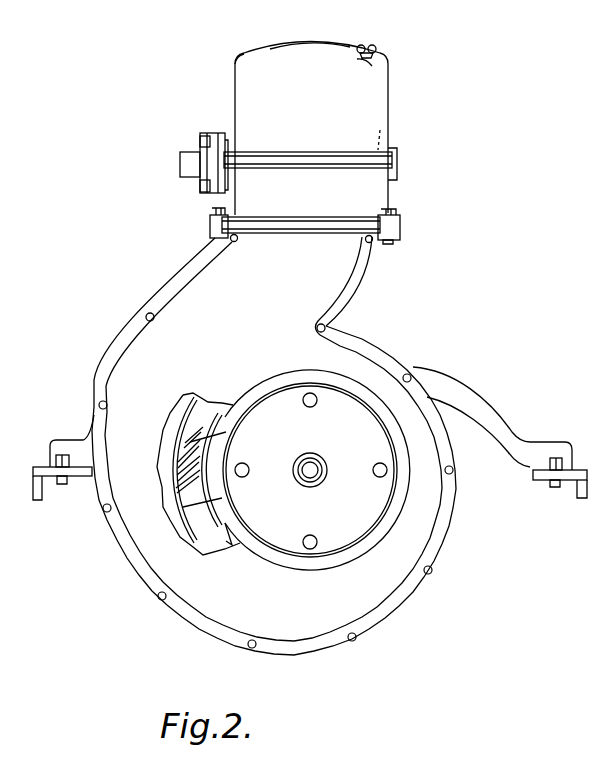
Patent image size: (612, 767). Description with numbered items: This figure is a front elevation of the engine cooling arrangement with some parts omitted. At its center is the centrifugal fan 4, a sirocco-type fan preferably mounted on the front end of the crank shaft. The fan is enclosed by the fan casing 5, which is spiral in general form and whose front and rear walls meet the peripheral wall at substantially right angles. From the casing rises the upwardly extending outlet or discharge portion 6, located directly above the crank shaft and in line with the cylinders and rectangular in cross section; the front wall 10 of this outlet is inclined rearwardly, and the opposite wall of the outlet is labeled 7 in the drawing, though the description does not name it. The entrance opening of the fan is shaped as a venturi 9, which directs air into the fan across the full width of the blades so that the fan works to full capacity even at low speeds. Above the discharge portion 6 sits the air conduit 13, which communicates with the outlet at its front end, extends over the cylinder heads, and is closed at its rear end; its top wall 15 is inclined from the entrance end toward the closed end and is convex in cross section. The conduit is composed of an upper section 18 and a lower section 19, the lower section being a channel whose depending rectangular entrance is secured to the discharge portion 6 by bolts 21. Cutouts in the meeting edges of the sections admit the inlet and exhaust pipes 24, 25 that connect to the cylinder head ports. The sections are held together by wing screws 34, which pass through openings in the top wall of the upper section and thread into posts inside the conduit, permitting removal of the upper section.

The centrifugal fan 4 is at (233, 403).
The fan casing 5 is at (302, 625).
The outlet or discharge portion 6 is at (230, 252).
The outlet passage wall 7 is at (357, 264).
The venturi 9 is at (386, 530).
The front wall of the outlet 10 is at (233, 308).
The air conduit 13 is at (311, 129).
The top wall 15 is at (309, 42).
The upper section 18 is at (240, 82).
The lower section 19 is at (301, 207).
The bolts 21 is at (210, 212).
The inlet pipe 24 is at (397, 163).
The exhaust pipe 25 is at (232, 163).
The wing screws 34 is at (367, 44).